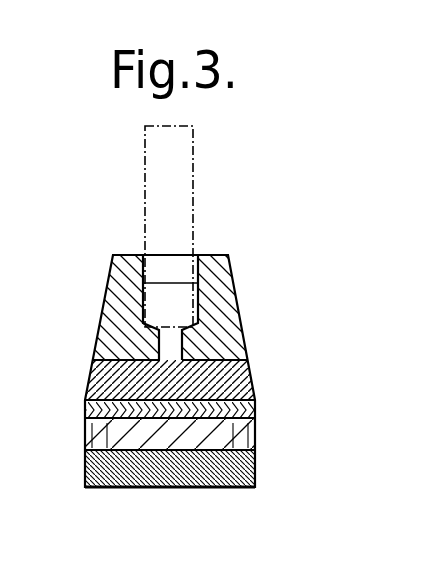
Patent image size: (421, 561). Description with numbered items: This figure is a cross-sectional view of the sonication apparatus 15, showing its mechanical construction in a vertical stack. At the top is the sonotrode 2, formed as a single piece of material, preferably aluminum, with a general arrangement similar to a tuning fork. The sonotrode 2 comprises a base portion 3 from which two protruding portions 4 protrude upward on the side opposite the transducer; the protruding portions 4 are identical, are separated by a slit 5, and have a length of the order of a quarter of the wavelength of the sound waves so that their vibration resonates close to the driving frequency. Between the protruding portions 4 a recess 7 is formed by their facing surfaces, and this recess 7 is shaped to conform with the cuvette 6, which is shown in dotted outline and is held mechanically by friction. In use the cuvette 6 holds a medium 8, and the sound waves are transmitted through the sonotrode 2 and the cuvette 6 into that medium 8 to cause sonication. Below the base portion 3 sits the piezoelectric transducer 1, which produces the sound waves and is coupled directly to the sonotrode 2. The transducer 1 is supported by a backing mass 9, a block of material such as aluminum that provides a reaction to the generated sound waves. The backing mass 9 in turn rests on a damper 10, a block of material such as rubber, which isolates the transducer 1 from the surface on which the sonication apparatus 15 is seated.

The piezoelectric transducer 1 is at (252, 405).
The sonotrode 2 is at (108, 330).
The base portion 3 is at (120, 386).
The protruding portions 4 is at (218, 277).
The slit 5 is at (175, 343).
The cuvette 6 is at (145, 152).
The recess 7 is at (200, 300).
The medium 8 is at (170, 282).
The backing mass 9 is at (203, 445).
The damper 10 is at (127, 475).
The sonication apparatus 15 is at (267, 317).